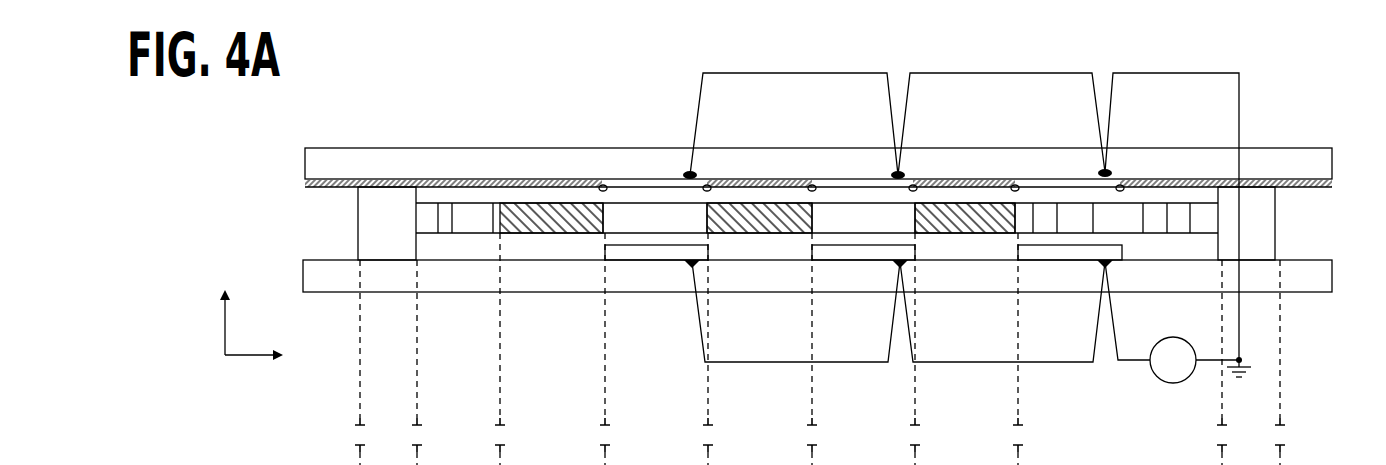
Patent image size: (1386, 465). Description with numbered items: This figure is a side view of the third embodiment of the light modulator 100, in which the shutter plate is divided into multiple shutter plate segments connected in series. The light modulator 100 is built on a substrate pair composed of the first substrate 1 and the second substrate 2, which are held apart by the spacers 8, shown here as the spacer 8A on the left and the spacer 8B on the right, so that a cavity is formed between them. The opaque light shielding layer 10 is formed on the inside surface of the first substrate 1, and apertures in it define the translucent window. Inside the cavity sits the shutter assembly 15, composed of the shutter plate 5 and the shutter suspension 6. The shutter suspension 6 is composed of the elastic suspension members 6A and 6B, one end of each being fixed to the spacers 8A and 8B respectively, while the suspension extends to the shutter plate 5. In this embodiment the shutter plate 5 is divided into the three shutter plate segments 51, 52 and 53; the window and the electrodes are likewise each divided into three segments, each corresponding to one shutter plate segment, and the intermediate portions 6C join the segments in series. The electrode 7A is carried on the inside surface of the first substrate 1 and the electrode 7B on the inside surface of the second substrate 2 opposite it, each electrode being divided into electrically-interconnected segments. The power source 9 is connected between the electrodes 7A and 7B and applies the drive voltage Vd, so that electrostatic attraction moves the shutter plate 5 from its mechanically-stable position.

The first substrate 1 is at (331, 165).
The second substrate 2 is at (331, 280).
The shutter plate 5 is at (502, 75).
The shutter suspension 6 is at (897, 222).
The elastic suspension member 6A is at (470, 201).
The elastic suspension member 6B is at (1180, 201).
The intermediate insulating layer portion 6C is at (650, 201).
The electrode 7A is at (665, 178).
The electrode 7B is at (655, 262).
The spacers 8 is at (833, 223).
The spacer 8A is at (375, 213).
The spacer 8B is at (1258, 220).
The power source 9 is at (1173, 385).
The light shielding layer 10 is at (310, 186).
The shutter assembly 15 is at (1200, 214).
The shutter plate segment 51 is at (558, 203).
The shutter plate segment 52 is at (755, 232).
The shutter plate segment 53 is at (968, 203).
The light modulator 100 is at (798, 239).